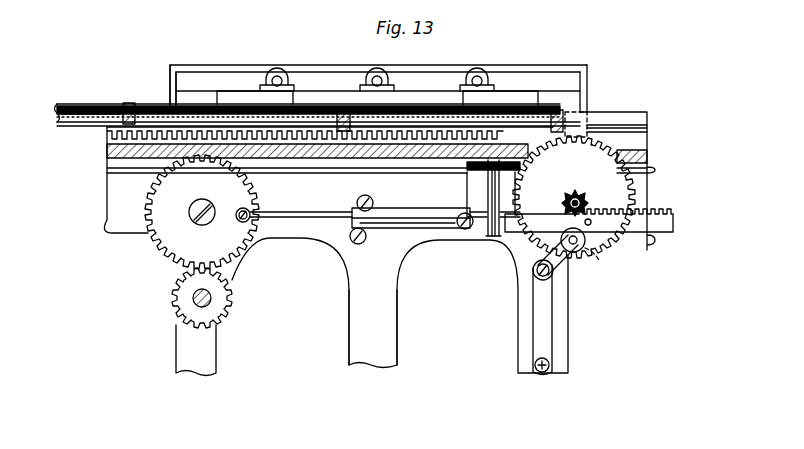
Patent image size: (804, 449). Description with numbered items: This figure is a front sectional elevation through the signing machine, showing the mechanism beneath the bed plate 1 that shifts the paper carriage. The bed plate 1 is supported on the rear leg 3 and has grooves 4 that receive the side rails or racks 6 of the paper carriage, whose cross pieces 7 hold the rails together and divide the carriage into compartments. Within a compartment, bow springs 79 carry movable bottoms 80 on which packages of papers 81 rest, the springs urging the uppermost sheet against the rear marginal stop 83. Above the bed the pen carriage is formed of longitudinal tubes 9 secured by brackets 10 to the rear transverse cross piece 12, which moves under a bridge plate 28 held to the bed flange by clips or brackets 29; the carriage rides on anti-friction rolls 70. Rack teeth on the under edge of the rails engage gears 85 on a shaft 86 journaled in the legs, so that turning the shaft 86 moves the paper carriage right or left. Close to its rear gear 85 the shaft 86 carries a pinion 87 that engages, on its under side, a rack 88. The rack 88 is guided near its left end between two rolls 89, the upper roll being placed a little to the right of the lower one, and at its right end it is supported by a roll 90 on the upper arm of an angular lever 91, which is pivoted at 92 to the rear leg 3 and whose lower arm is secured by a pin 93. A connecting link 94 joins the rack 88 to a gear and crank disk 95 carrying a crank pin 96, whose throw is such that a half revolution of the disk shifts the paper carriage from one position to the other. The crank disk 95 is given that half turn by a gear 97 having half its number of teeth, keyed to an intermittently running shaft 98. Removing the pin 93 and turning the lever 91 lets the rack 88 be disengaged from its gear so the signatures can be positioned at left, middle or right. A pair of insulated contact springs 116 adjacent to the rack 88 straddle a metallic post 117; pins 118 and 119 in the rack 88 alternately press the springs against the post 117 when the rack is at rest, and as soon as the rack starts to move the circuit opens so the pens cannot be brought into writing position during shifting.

The bed plate 1 is at (106, 150).
The rear leg 3 is at (373, 327).
The grooves 4 is at (651, 131).
The racks 6 is at (592, 118).
The cross pieces 7 is at (343, 112).
The longitudinal tubes 9 is at (468, 87).
The brackets 10 is at (490, 90).
The rear transverse cross piece 12 is at (318, 108).
The bridge plates 28 is at (530, 66).
The clips or brackets 29 is at (590, 86).
The rolls 70 is at (262, 100).
The bow springs 79 is at (88, 122).
The movable bottoms 80 is at (60, 126).
The papers 81 is at (190, 104).
The rear marginal stop 83 is at (127, 104).
The gears 85 is at (574, 197).
The shaft 86 is at (566, 205).
The pinion 87 is at (581, 197).
The rack 88 is at (589, 221).
The rolls 89 is at (358, 201).
The roll 90 is at (580, 266).
The angular lever 91 is at (560, 306).
The pivot 92 is at (535, 276).
The pin 93 is at (547, 371).
The connecting link 94 is at (305, 211).
The gear and crank disk 95 is at (202, 212).
The crank pin 96 is at (239, 209).
The gear 97 is at (236, 292).
The intermittently running shaft 98 is at (192, 300).
The contact springs 116 is at (487, 181).
The metallic post 117 is at (490, 240).
The pin 118 is at (481, 218).
The pin 119 is at (596, 221).